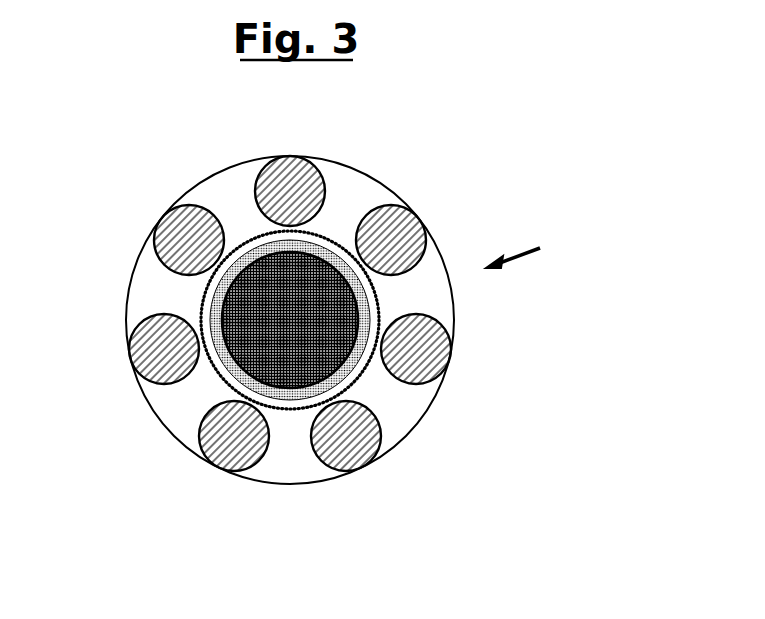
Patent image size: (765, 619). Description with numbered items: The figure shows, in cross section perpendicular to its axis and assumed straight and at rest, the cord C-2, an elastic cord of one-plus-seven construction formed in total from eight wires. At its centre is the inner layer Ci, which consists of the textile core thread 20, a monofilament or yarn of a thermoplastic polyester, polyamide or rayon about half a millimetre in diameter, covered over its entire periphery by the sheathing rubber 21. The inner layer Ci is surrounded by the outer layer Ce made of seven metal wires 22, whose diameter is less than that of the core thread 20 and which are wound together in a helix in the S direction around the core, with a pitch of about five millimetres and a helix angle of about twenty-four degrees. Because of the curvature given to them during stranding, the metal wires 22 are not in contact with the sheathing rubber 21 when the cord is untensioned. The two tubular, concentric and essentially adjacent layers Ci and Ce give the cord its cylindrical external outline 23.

The core thread 20 is at (332, 243).
The sheathing rubber 21 is at (258, 253).
The metal wires 22 is at (160, 340).
The cylindrical external outline 23 is at (417, 423).
The inner layer Ci is at (218, 362).
The outer layer Ce is at (304, 359).
The cord C-2 is at (540, 248).